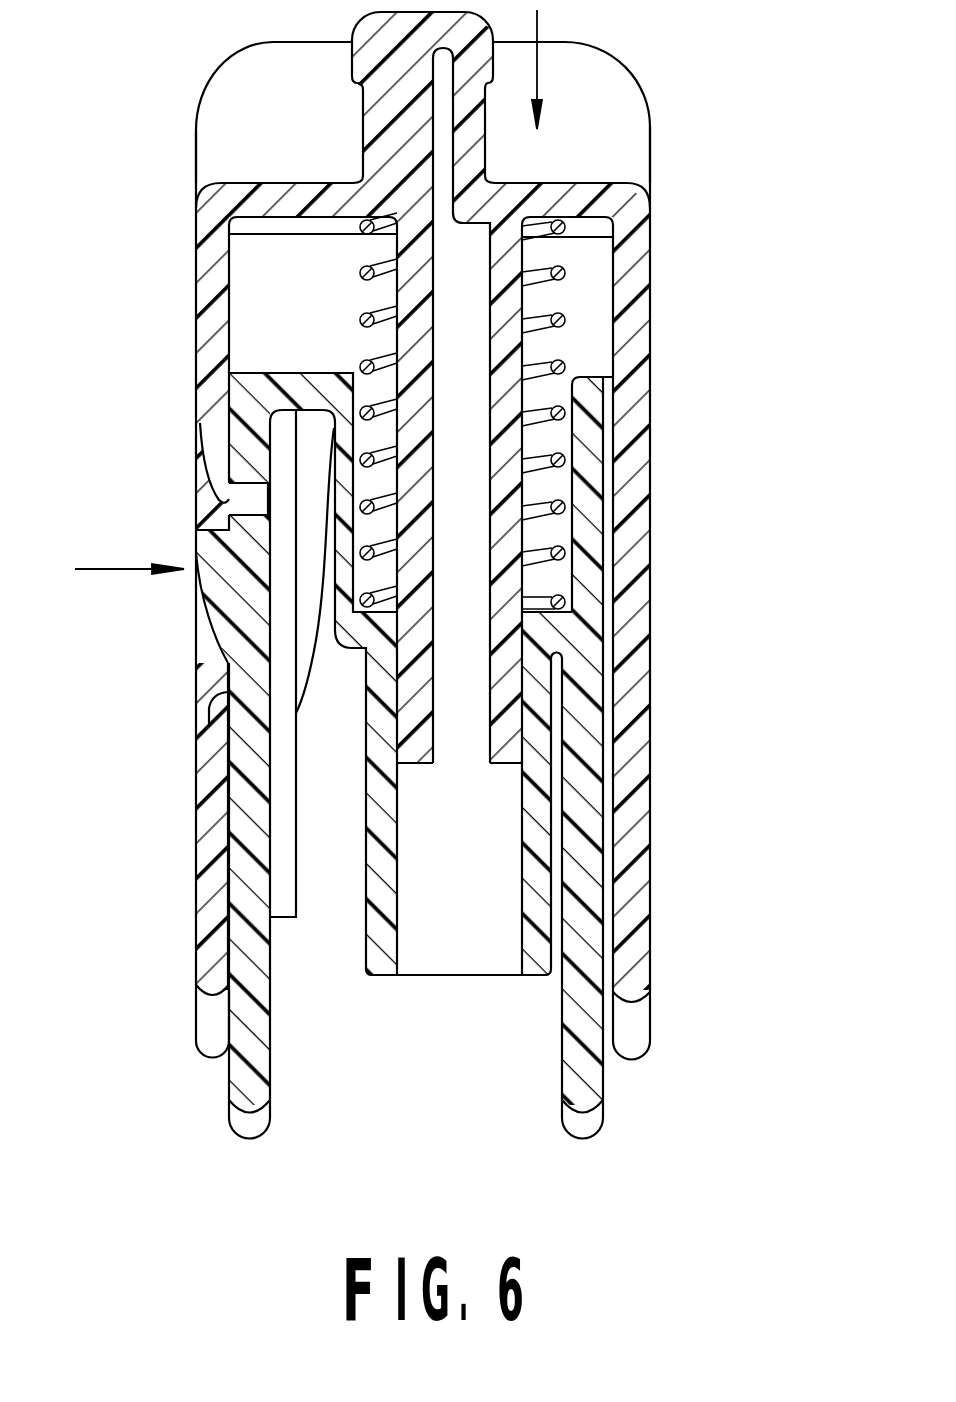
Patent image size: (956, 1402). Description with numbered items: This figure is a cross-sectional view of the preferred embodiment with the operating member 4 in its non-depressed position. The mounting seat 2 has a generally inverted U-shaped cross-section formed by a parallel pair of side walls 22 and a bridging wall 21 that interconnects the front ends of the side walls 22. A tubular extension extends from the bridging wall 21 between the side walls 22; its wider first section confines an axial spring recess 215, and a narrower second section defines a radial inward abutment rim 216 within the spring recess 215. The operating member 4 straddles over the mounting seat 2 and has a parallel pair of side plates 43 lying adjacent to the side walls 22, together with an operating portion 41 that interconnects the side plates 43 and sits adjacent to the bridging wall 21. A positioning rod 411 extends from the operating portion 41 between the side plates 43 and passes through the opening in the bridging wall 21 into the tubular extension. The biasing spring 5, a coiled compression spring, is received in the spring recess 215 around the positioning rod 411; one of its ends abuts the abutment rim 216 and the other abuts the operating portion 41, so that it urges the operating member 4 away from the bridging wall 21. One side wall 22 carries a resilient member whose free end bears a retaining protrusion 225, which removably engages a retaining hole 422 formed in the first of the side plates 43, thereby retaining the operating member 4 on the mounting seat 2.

The mounting seat 2 is at (416, 699).
The bridging wall 21 is at (293, 388).
The spring recess 215 is at (550, 533).
The abutment rim 216 is at (552, 615).
The side walls 22 is at (253, 1055).
The retaining protrusion 225 is at (228, 593).
The operating member 4 is at (440, 536).
The operating portion 41 is at (550, 200).
The positioning rod 411 is at (512, 268).
The retaining hole 422 is at (208, 683).
The side plates 43 is at (215, 912).
The biasing spring 5 is at (563, 310).